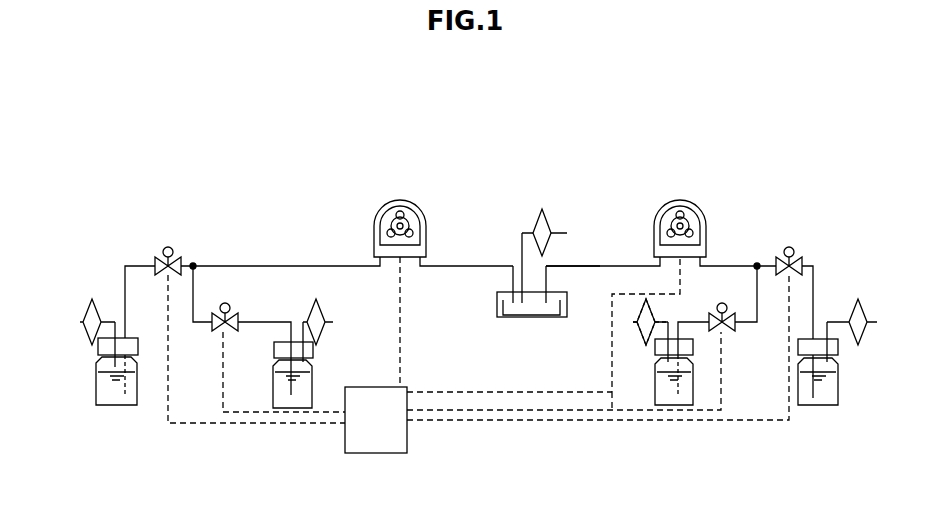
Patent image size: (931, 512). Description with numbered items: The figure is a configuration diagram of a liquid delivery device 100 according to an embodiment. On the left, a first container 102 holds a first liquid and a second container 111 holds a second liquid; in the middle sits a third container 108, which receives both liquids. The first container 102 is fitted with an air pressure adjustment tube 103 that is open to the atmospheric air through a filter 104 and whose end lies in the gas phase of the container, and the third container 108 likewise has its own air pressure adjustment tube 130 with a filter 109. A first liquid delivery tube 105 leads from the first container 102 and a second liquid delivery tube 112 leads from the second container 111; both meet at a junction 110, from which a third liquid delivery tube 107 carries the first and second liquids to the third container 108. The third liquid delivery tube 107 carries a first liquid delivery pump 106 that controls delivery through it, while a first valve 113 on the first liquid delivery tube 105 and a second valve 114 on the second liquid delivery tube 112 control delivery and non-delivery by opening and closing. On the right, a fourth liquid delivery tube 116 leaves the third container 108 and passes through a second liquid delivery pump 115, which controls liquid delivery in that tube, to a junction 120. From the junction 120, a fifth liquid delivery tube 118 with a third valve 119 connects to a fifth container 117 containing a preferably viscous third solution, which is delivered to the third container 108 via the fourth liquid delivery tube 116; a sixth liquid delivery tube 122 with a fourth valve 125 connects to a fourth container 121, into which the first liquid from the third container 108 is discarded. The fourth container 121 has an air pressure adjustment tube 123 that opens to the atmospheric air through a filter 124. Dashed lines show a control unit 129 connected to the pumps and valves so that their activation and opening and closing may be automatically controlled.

The liquid delivery device 100 is at (508, 95).
The first container 102 is at (116, 389).
The air pressure adjustment tube 103 is at (112, 319).
The filter 104 is at (84, 316).
The first liquid delivery tube 105 is at (125, 398).
The first liquid delivery pump 106 is at (399, 203).
The third liquid delivery tube 107 is at (512, 264).
The third container 108 is at (549, 318).
The filter 109 is at (542, 209).
The junction 110 is at (194, 262).
The second container 111 is at (278, 397).
The second liquid delivery tube 112 is at (298, 396).
The first valve 113 is at (167, 246).
The second valve 114 is at (219, 329).
The second liquid delivery pump 115 is at (679, 203).
The fourth liquid delivery tube 116 is at (600, 264).
The fifth container 117 is at (668, 388).
The fifth liquid delivery tube 118 is at (677, 393).
The third valve 119 is at (722, 298).
The junction 120 is at (757, 262).
The fourth container 121 is at (825, 405).
The sixth liquid delivery tube 122 is at (797, 410).
The air pressure adjustment tube 123 is at (830, 320).
The filter 124 is at (858, 300).
The fourth valve 125 is at (789, 246).
The control unit 129 is at (412, 443).
The air pressure adjustment tube 130 is at (522, 231).